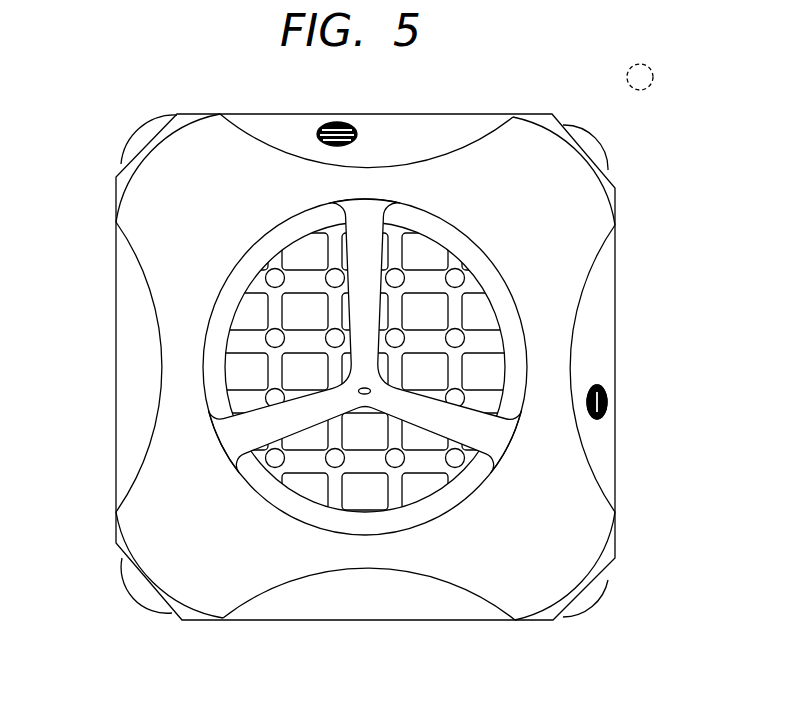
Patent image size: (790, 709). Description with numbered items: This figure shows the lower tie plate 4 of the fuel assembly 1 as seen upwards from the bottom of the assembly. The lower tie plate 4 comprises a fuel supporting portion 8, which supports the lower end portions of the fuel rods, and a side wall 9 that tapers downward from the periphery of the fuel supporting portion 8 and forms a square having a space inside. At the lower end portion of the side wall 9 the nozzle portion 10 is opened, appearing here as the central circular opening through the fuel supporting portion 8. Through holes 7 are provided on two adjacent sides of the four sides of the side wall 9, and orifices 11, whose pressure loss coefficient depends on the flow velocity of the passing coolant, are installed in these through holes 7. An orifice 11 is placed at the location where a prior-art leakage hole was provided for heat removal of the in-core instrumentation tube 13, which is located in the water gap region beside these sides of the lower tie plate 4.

The fuel assembly 1 is at (110, 152).
The lower tie plate 4 is at (397, 116).
The through holes 7 is at (603, 392).
The fuel supporting portion 8 is at (290, 466).
The side wall 9 is at (597, 296).
The nozzle portion 10 is at (242, 309).
The orifices 11 is at (338, 123).
The in-core instrumentation tube 13 is at (653, 69).